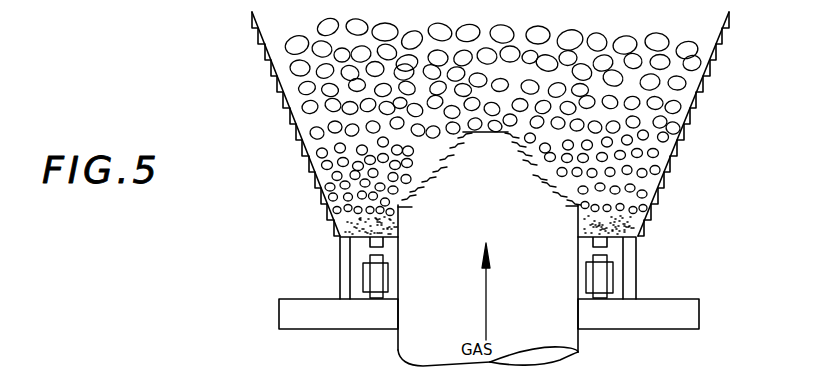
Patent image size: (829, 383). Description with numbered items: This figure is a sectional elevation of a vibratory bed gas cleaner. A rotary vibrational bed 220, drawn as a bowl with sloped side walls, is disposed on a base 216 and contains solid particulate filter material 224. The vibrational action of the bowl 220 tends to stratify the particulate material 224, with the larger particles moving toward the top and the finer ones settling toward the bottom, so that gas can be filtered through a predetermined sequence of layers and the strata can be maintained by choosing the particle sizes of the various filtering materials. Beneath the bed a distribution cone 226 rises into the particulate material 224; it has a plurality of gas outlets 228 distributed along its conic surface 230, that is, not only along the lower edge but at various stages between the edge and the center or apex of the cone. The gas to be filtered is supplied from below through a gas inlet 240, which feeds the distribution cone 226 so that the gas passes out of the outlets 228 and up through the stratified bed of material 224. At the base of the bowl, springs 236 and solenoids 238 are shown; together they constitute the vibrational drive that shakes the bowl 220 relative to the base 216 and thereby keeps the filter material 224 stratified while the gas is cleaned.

The base 216 is at (688, 299).
The rotary vibrational bed 220 is at (670, 192).
The solid particulate filter material 224 is at (357, 85).
The distribution cone 226 is at (488, 132).
The gas outlets 228 is at (583, 216).
The conic surface 230 is at (547, 172).
The springs 236 is at (340, 275).
The solenoids 238 is at (367, 280).
The gas inlet 240 is at (580, 355).